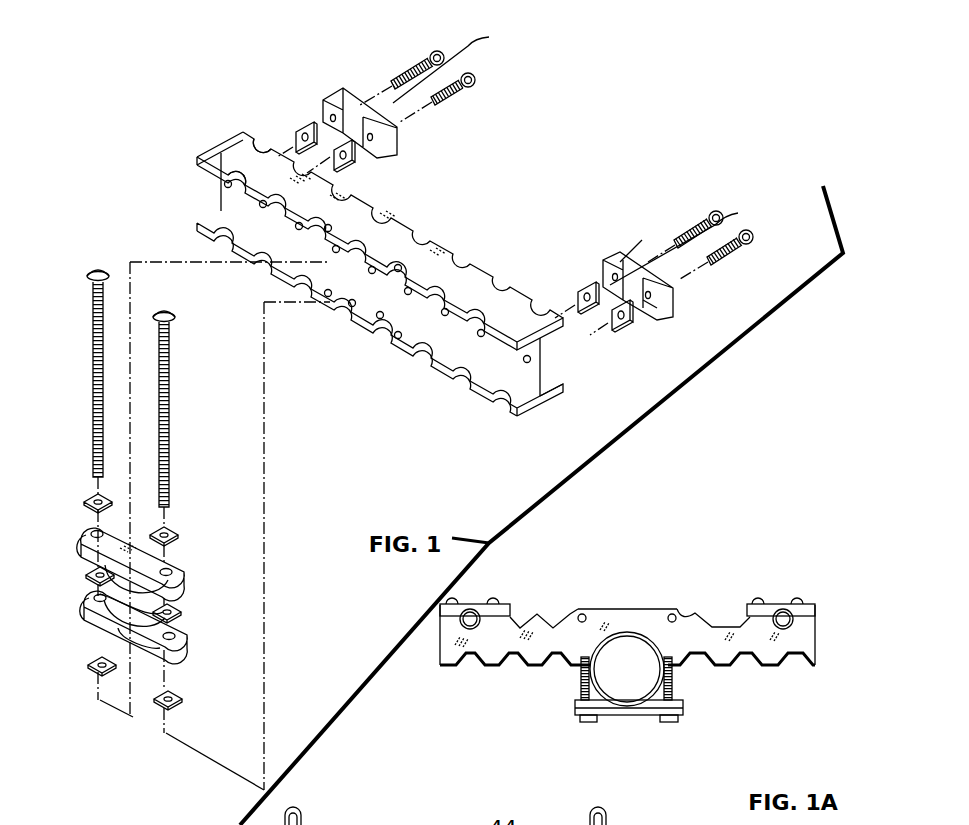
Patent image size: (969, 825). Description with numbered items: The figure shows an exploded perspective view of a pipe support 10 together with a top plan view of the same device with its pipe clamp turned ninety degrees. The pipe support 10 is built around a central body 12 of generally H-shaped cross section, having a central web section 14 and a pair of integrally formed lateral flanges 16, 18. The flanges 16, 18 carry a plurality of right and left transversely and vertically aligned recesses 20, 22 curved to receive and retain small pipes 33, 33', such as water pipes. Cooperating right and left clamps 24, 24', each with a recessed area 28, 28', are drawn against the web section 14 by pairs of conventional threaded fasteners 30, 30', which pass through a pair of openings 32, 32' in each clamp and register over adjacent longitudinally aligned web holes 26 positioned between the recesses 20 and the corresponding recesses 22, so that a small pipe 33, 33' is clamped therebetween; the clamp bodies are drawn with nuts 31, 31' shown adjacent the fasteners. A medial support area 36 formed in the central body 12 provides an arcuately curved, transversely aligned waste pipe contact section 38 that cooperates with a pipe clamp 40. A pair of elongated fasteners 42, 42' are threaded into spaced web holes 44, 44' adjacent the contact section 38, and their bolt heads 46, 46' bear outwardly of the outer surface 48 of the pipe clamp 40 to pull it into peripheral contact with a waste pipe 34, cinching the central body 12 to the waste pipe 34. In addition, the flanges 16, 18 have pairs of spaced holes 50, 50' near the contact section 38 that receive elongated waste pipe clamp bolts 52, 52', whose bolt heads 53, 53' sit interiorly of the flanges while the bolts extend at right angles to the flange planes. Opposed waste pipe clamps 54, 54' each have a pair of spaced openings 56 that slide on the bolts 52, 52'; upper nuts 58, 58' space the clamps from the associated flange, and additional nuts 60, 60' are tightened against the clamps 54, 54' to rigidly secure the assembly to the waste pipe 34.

In FIG. 1, the pipe support 10 is at (503, 183).
In FIG. 1A, the pipe support 10 is at (590, 600).
In FIG. 1, the central body 12 is at (350, 217).
In FIG. 1A, the central body 12 is at (657, 610).
In FIG. 1, the central web section 14 is at (563, 400).
In FIG. 1, the lateral flange 16 is at (514, 408).
In FIG. 1, the lateral flange 18 is at (488, 378).
In FIG. 1, the recesses 20 is at (258, 140).
In FIG. 1A, the recesses 20 is at (740, 625).
In FIG. 1, the recesses 22 is at (213, 233).
In FIG. 1, the right clamp 24 is at (638, 271).
In FIG. 1A, the right clamp 24 is at (781, 582).
In FIG. 1, the left clamp 24' is at (377, 101).
In FIG. 1A, the left clamp 24' is at (475, 585).
In FIG. 1, the web holes 26 is at (220, 194).
In FIG. 1, the recessed area 28 is at (688, 240).
In FIG. 1, the recessed area 28' is at (453, 59).
In FIG. 1, the threaded fastener 30 is at (610, 178).
In FIG. 1, the threaded fastener 30' is at (560, 136).
In FIG. 1, the nut 31 is at (470, 266).
In FIG. 1, the nut 31' is at (429, 203).
In FIG. 1, the clamp opening 32 is at (652, 231).
In FIG. 1, the clamp opening 32' is at (660, 333).
In FIG. 1A, the small pipe 33 is at (818, 613).
In FIG. 1A, the small pipe 33' is at (500, 598).
In FIG. 1A, the waste pipe 34 is at (633, 632).
In FIG. 1, the medial support area 36 is at (410, 220).
In FIG. 1, the waste pipe contact section 38 is at (363, 241).
In FIG. 1A, the waste pipe contact section 38 is at (624, 636).
In FIG. 1A, the pipe clamp 40 is at (647, 710).
In FIG. 1A, the elongated fastener 42 is at (698, 681).
In FIG. 1A, the elongated fastener 42' is at (556, 686).
In FIG. 1, the web hole 44 is at (334, 337).
In FIG. 1, the web hole 44' is at (362, 353).
In FIG. 1A, the bolt head 46 is at (692, 734).
In FIG. 1A, the bolt head 46' is at (579, 742).
In FIG. 1A, the outer surface 48 is at (620, 716).
In FIG. 1, the flange hole 50 is at (378, 305).
In FIG. 1A, the flange hole 50 is at (697, 575).
In FIG. 1, the flange hole 50' is at (297, 236).
In FIG. 1A, the flange hole 50' is at (565, 577).
In FIG. 1, the waste pipe clamp bolt 52 is at (211, 556).
In FIG. 1, the waste pipe clamp bolt 52' is at (95, 499).
In FIG. 1, the bolt head 53 is at (175, 300).
In FIG. 1, the bolt head 53' is at (87, 258).
In FIG. 1, the waste pipe clamp 54 is at (159, 638).
In FIG. 1, the waste pipe clamp 54' is at (181, 603).
In FIG. 1, the openings 56 is at (174, 562).
In FIG. 1, the upper nut 58 is at (193, 523).
In FIG. 1, the upper nut 58' is at (82, 489).
In FIG. 1, the nut 60 is at (198, 667).
In FIG. 1, the nut 60' is at (79, 636).